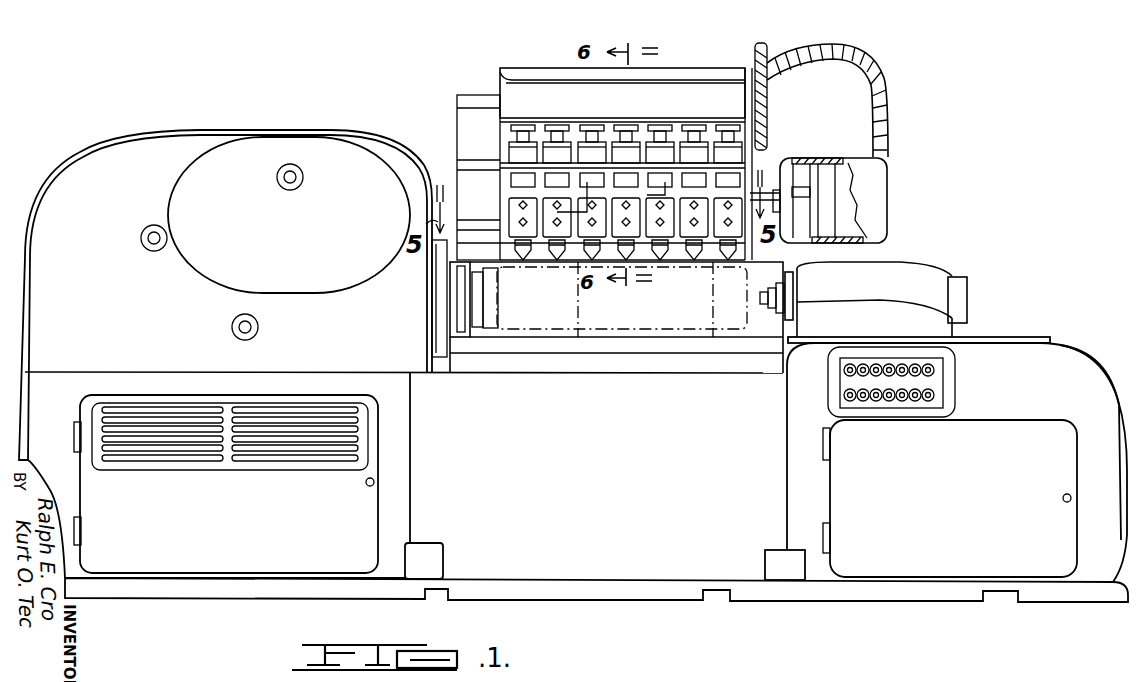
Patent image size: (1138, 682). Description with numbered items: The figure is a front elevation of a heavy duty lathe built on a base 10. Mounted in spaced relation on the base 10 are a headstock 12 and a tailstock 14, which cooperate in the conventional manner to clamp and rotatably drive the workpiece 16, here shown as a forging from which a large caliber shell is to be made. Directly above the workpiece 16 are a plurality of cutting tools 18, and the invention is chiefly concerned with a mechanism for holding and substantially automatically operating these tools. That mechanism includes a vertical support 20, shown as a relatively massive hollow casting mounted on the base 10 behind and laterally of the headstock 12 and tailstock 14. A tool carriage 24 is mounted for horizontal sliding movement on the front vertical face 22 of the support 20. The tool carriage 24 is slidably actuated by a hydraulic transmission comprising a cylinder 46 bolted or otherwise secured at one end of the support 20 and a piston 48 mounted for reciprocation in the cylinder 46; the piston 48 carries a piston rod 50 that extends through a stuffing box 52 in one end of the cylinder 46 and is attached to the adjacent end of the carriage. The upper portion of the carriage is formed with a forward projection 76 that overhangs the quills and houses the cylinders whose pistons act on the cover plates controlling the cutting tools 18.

The base 10 is at (987, 345).
The headstock 12 is at (245, 146).
The tailstock 14 is at (930, 268).
The workpiece 16 is at (608, 320).
The cutting tools 18 is at (663, 260).
The vertical support 20 is at (470, 93).
The front vertical face 22 is at (463, 118).
The tool carriage 24 is at (507, 187).
The cylinder 46 is at (863, 175).
The piston 48 is at (823, 173).
The piston rod 50 is at (803, 187).
The stuffing box 52 is at (780, 210).
The forward projection 76 is at (545, 92).